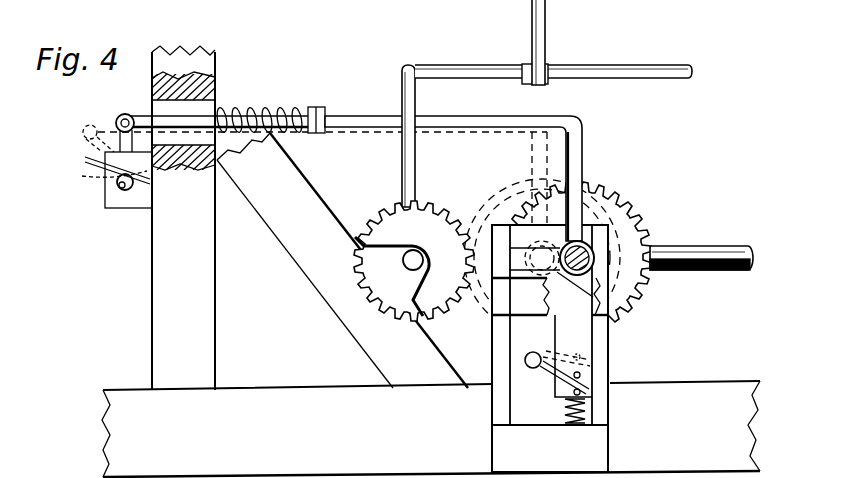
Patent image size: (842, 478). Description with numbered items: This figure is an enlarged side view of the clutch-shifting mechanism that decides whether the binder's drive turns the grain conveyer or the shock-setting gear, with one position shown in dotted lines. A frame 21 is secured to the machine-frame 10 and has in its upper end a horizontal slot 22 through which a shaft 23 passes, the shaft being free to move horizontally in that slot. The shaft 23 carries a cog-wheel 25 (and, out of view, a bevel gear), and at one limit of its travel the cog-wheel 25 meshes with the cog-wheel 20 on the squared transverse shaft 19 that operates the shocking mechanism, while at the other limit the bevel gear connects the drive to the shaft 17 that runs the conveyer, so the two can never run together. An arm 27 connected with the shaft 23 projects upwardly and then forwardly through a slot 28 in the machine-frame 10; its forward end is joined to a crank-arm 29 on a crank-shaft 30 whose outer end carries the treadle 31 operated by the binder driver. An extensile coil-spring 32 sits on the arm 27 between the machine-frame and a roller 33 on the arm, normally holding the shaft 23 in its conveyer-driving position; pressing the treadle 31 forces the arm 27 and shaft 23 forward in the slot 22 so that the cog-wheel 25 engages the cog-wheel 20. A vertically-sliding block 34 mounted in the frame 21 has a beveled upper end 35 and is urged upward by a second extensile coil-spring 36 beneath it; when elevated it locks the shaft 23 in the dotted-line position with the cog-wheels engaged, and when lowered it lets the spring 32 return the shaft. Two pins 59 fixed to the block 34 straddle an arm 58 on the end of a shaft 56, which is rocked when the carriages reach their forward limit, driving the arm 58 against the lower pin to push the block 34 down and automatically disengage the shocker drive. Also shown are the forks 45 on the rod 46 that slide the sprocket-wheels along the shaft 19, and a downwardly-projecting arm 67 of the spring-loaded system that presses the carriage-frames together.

The machine-frame 10 is at (431, 261).
The shaft 17 is at (702, 251).
The shaft 19 is at (410, 262).
The cog-wheel 20 is at (414, 261).
The frame 21 is at (603, 351).
The horizontal slot 22 is at (513, 250).
The shaft 23 is at (582, 258).
The cog-wheel 25 is at (622, 213).
The arm 27 is at (583, 124).
The slot 28 is at (216, 112).
The crank-arm 29 is at (114, 125).
The crank-shaft 30 is at (117, 184).
The treadle 31 is at (85, 165).
The extensile coil-spring 32 is at (278, 109).
The roller 33 is at (320, 108).
The vertically-sliding block 34 is at (583, 333).
The beveled upper end 35 is at (614, 315).
The extensile coil-spring 36 is at (569, 426).
The forks 45 is at (403, 153).
The rod 46 is at (470, 60).
The shaft 56 is at (527, 370).
The arm 58 is at (560, 377).
The pins 59 is at (592, 375).
The downwardly-projecting arms 67 is at (545, 24).